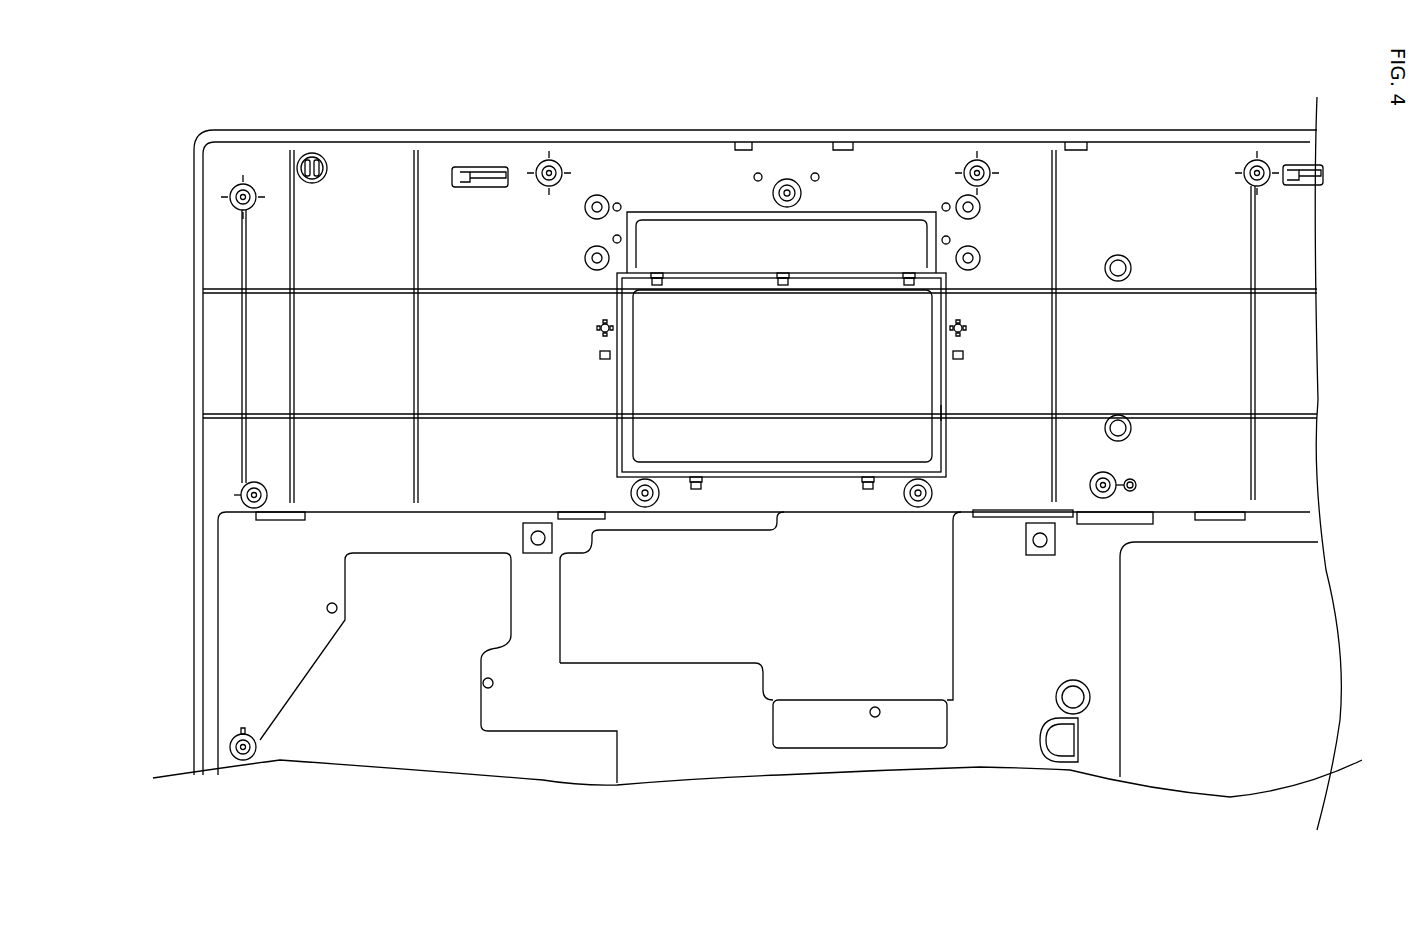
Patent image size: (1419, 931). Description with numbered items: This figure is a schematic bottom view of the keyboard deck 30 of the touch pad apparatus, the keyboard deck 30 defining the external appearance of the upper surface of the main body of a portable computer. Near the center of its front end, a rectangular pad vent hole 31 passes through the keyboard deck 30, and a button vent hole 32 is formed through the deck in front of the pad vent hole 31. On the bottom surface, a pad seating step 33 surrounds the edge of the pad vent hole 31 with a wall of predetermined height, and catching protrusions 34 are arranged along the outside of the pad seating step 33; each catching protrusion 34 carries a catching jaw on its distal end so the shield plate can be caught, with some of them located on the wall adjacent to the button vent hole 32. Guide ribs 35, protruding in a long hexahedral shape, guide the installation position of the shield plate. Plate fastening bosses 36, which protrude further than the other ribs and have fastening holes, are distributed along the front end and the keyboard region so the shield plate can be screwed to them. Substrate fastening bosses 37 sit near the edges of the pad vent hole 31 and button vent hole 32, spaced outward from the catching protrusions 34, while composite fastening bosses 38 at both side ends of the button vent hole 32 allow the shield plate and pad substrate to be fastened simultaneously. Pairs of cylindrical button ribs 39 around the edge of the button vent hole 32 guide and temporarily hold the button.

The keyboard deck 30 is at (193, 277).
The pad vent hole 31 is at (773, 407).
The button vent hole 32 is at (771, 229).
The pad seating step 33 is at (940, 413).
The catching protrusions 34 is at (657, 290).
The guide ribs 35 is at (1065, 412).
The plate fastening bosses 36 is at (250, 183).
The substrate fastening bosses 37 is at (787, 179).
The composite fastening bosses 38 is at (585, 264).
The button ribs 39 is at (622, 239).